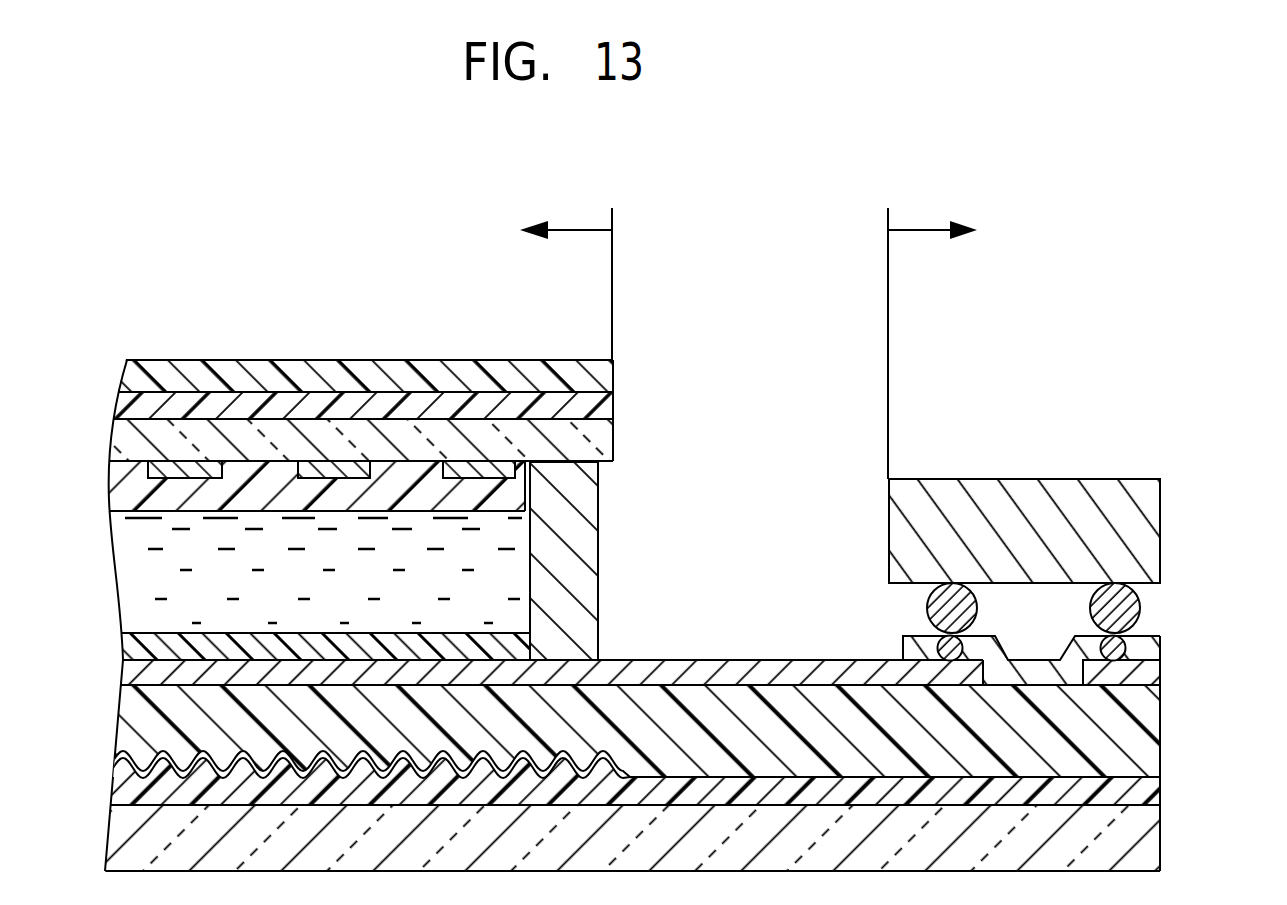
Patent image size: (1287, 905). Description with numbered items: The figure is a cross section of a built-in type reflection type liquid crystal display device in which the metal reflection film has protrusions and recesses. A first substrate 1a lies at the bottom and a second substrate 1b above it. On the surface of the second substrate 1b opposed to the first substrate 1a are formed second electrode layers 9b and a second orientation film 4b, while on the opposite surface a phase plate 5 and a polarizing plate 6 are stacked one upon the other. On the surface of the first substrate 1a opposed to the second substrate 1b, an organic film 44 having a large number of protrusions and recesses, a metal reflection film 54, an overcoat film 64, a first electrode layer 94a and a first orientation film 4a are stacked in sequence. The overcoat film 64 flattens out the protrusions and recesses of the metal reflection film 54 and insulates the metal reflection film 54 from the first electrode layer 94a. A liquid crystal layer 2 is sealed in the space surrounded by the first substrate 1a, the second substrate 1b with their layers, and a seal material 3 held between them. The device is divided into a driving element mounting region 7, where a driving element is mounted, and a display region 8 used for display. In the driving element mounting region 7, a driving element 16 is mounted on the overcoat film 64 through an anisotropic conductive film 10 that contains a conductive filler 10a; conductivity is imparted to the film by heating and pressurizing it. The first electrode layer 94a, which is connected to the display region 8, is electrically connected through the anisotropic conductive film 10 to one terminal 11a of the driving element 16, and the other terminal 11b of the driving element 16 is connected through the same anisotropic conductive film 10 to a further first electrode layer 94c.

The first substrate 1a is at (145, 840).
The second substrate 1b is at (136, 447).
The liquid crystal layer 2 is at (150, 572).
The seal material 3 is at (568, 560).
The first orientation film 4a is at (130, 653).
The second orientation film 4b is at (136, 489).
The phase plate 5 is at (132, 412).
The polarizing plate 6 is at (130, 374).
The driving element mounting region 7 is at (922, 230).
The display region 8 is at (572, 230).
The second electrode layers 9b is at (190, 470).
The anisotropic conductive film 10 is at (1150, 652).
The conductive filler 10a is at (937, 650).
The one terminal 11a is at (937, 604).
The other terminal 11b is at (1118, 607).
The driving element 16 is at (1043, 447).
The organic film 44 is at (135, 792).
The metal reflection film 54 is at (135, 768).
The overcoat film 64 is at (160, 729).
The first electrode layer 94a is at (140, 672).
The first electrode layer 94c is at (1140, 672).